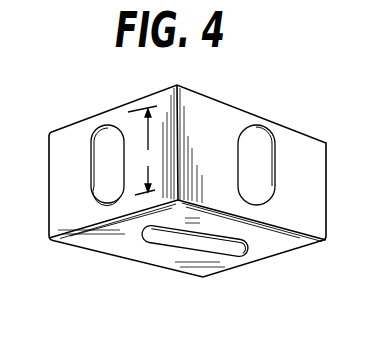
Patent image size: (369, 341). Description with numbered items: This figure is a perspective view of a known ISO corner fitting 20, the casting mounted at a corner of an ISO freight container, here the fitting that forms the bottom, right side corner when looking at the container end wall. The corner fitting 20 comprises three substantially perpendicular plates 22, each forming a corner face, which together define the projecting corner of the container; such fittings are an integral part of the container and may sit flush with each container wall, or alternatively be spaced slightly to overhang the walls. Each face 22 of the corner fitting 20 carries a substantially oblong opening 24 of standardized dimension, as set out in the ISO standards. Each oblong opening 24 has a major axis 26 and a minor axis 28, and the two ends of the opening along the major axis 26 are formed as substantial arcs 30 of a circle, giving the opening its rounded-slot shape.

The ISO corner fitting 20 is at (160, 277).
The plate 22 is at (62, 133).
The oblong opening 24 is at (107, 127).
The major axis 26 is at (128, 158).
The minor axis 28 is at (90, 170).
The arc 30 is at (110, 202).